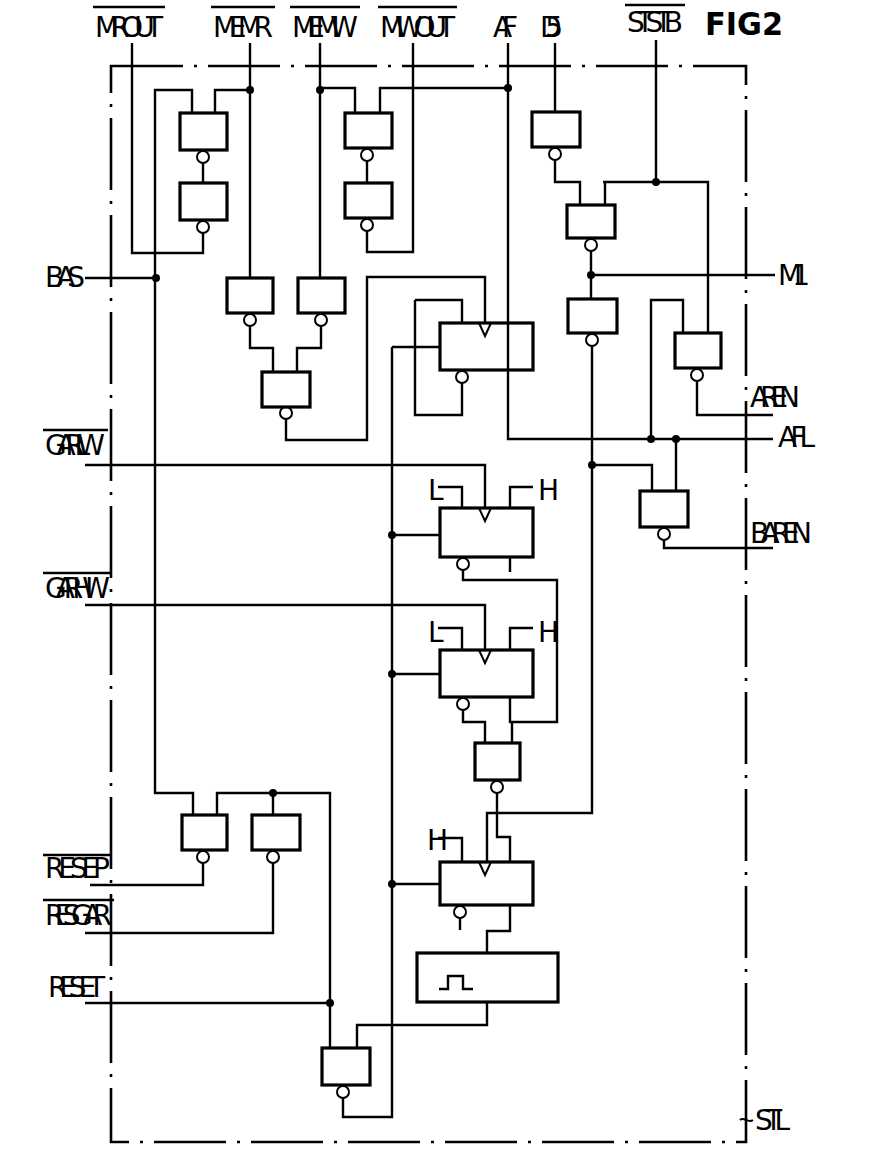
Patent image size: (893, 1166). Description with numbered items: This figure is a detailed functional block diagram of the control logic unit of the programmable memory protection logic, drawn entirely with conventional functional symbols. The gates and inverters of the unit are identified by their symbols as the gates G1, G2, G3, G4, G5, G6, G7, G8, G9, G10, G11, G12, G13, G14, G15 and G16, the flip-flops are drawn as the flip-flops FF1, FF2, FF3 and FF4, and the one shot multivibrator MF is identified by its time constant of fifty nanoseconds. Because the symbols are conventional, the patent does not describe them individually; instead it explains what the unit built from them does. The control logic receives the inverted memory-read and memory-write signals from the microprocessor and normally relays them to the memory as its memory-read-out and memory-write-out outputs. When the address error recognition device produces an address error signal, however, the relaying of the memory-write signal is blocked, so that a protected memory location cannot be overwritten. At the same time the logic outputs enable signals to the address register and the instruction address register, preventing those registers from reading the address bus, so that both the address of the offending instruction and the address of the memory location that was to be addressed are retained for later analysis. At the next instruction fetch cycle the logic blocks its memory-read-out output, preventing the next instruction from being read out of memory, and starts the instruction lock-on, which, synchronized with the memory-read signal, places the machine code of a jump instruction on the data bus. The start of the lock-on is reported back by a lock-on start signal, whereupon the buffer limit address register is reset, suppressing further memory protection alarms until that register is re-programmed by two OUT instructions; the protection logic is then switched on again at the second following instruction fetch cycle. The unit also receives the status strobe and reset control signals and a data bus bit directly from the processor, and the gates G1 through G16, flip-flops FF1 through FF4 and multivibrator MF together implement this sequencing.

The OR gate G1 is at (227, 128).
The inverter G2 is at (227, 204).
The OR gate G3 is at (392, 128).
The inverter G4 is at (392, 204).
The inverter G5 is at (227, 297).
The inverter G6 is at (333, 302).
The OR gate G7 is at (310, 390).
The inverter G8 is at (580, 128).
The OR gate G9 is at (615, 222).
The inverter G10 is at (574, 307).
The OR gate G11 is at (675, 360).
The OR gate G12 is at (688, 508).
The OR gate G13 is at (475, 765).
The OR gate G14 is at (182, 838).
The inverter G15 is at (292, 840).
The OR gate G16 is at (322, 1068).
The flip-flop FF1 is at (486, 353).
The flip-flop FF2 is at (486, 539).
The flip-flop FF3 is at (486, 680).
The flip-flop FF4 is at (486, 890).
The one shot multivibrator MF is at (558, 978).